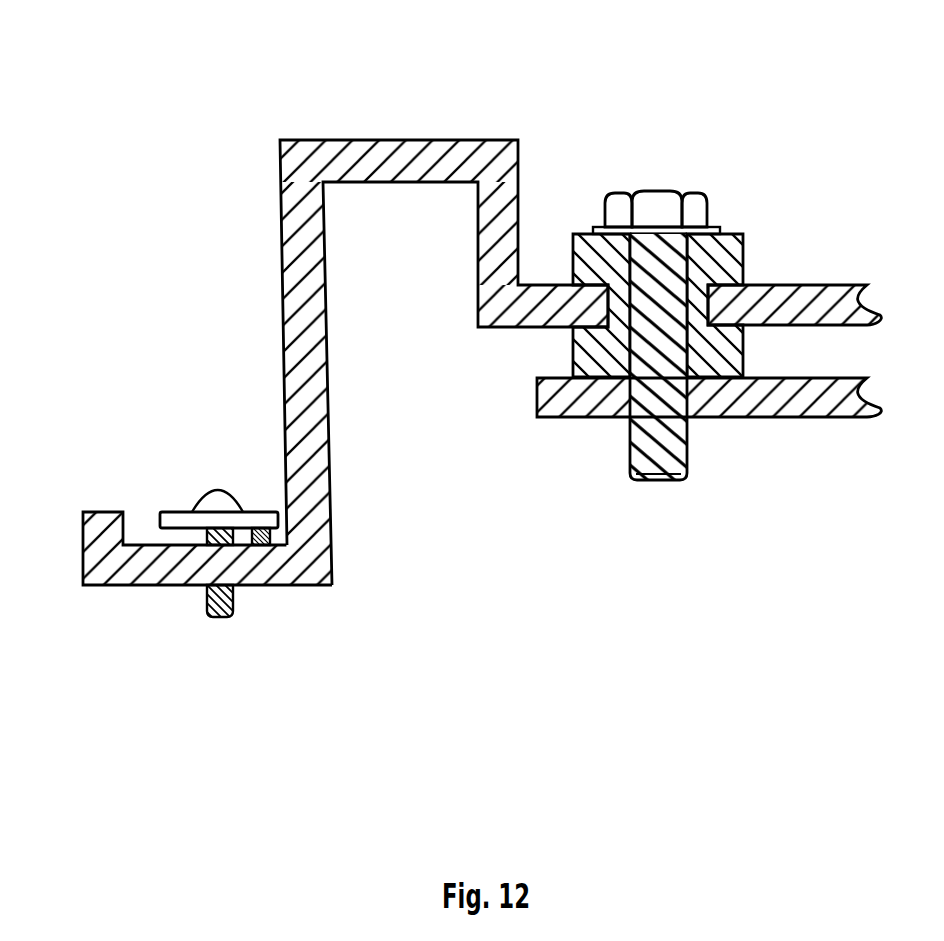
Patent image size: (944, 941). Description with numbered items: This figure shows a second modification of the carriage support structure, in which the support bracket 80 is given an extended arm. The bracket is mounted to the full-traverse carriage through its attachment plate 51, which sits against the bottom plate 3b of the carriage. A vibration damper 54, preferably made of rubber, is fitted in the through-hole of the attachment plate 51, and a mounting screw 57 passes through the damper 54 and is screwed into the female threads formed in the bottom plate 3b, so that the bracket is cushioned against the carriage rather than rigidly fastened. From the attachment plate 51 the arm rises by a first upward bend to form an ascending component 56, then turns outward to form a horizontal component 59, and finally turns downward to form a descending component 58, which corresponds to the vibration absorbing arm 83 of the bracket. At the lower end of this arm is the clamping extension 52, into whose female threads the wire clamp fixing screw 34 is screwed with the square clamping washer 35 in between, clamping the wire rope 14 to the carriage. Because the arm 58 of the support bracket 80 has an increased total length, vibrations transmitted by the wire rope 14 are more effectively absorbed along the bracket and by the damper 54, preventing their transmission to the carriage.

The support bracket 80 is at (365, 308).
The vibration absorbing arm 83 is at (308, 150).
The horizontal component 59 is at (430, 140).
The ascending component 56 is at (522, 200).
The attachment plate 51 is at (525, 328).
The descending component 58 is at (320, 432).
The clamping extension 52 is at (105, 585).
The square clamping washer 35 is at (173, 520).
The wire clamp fixing screw 34 is at (212, 505).
The wire rope 14 is at (260, 528).
The bottom plate 3b is at (778, 403).
The vibration damper 54 is at (740, 230).
The mounting screw 57 is at (655, 202).